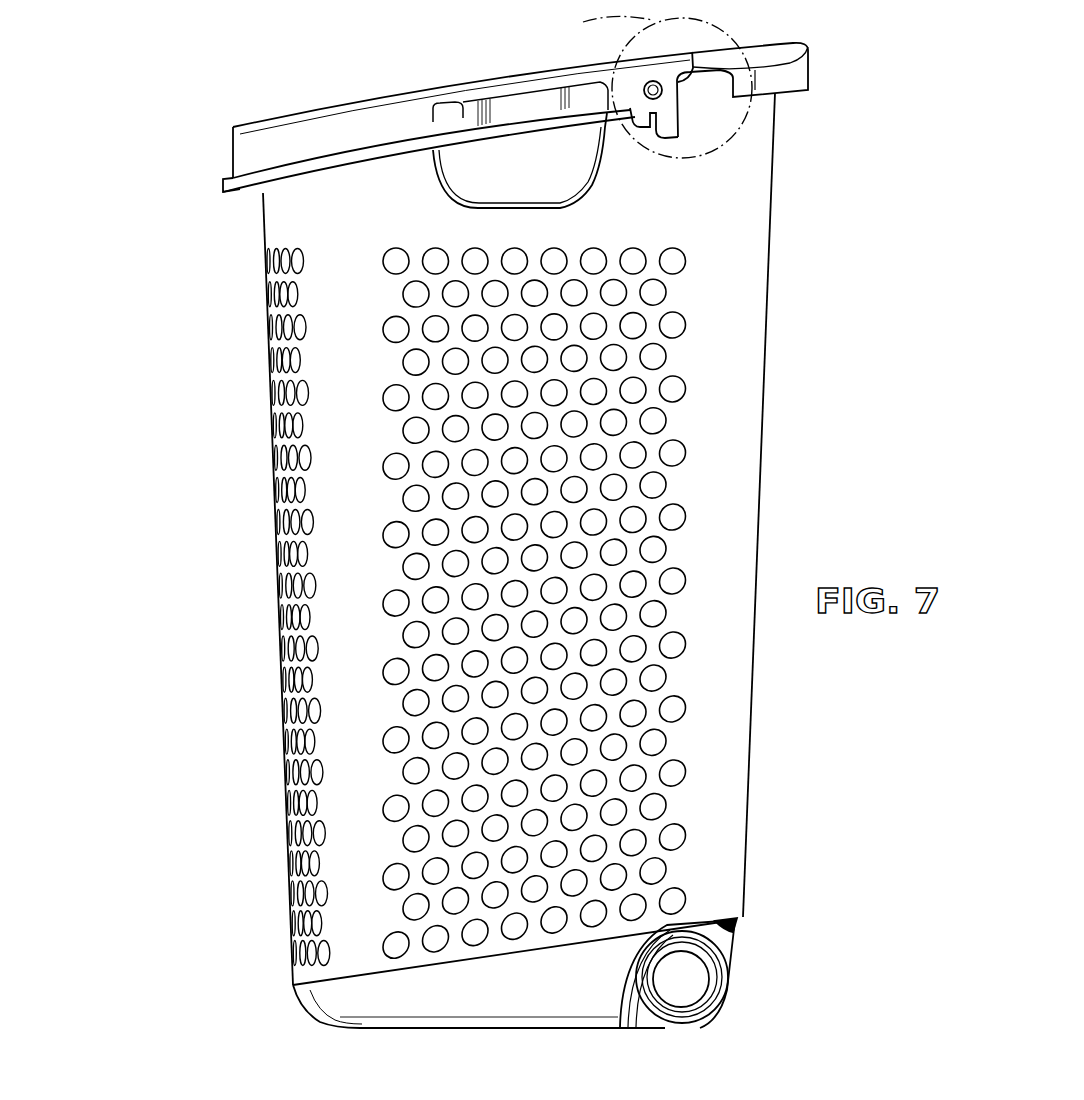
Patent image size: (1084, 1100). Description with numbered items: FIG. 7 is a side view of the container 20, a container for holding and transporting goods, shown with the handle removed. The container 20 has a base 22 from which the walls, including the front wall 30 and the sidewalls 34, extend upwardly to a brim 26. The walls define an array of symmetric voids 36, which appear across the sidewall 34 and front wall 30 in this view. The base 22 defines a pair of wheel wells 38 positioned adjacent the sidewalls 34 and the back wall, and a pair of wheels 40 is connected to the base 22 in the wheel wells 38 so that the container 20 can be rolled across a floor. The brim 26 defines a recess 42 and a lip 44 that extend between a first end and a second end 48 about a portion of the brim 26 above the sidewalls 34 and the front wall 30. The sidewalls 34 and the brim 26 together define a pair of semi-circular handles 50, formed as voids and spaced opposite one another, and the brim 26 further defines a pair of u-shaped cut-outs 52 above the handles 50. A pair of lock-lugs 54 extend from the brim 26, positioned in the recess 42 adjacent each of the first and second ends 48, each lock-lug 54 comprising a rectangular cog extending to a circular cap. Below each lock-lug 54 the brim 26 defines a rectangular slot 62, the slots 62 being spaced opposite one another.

The container 20 is at (73, 98).
The base 22 is at (367, 1027).
The brim 26 is at (797, 66).
The front wall 30 is at (270, 379).
The sidewalls 34 is at (500, 604).
The voids 36 is at (298, 462).
The wheel wells 38 is at (725, 928).
The wheels 40 is at (700, 986).
The recess 42 is at (495, 141).
The lip 44 is at (243, 187).
The second end 48 is at (790, 44).
The handles 50 is at (583, 197).
The cut-outs 52 is at (430, 133).
The lock-lugs 54 is at (656, 88).
The slots 62 is at (647, 127).